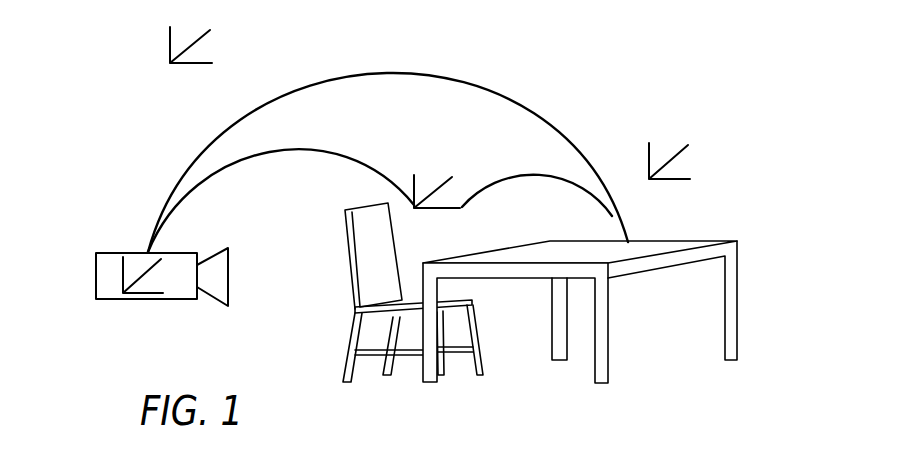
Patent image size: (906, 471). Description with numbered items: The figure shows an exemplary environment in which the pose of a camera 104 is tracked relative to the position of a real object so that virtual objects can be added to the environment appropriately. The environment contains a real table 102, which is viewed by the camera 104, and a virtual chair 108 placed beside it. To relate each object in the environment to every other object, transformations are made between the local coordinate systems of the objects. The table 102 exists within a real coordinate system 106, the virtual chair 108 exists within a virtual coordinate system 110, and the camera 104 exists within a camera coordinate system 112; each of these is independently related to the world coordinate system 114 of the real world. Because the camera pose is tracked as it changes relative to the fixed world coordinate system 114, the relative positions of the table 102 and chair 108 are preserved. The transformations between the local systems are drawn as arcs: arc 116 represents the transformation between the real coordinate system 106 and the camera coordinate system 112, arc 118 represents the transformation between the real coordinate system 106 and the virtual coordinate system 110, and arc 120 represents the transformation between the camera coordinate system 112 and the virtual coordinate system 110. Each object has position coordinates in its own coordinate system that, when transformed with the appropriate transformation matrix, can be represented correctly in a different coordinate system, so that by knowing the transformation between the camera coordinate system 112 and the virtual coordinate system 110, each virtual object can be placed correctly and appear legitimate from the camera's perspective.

The table 102 is at (668, 247).
The camera 104 is at (163, 300).
The real coordinate system 106 is at (680, 165).
The virtual chair 108 is at (343, 240).
The virtual coordinate system 110 is at (414, 188).
The camera coordinate system 112 is at (122, 272).
The world coordinate system 114 is at (170, 47).
The arc 116 is at (482, 91).
The arc 118 is at (527, 173).
The arc 120 is at (335, 154).